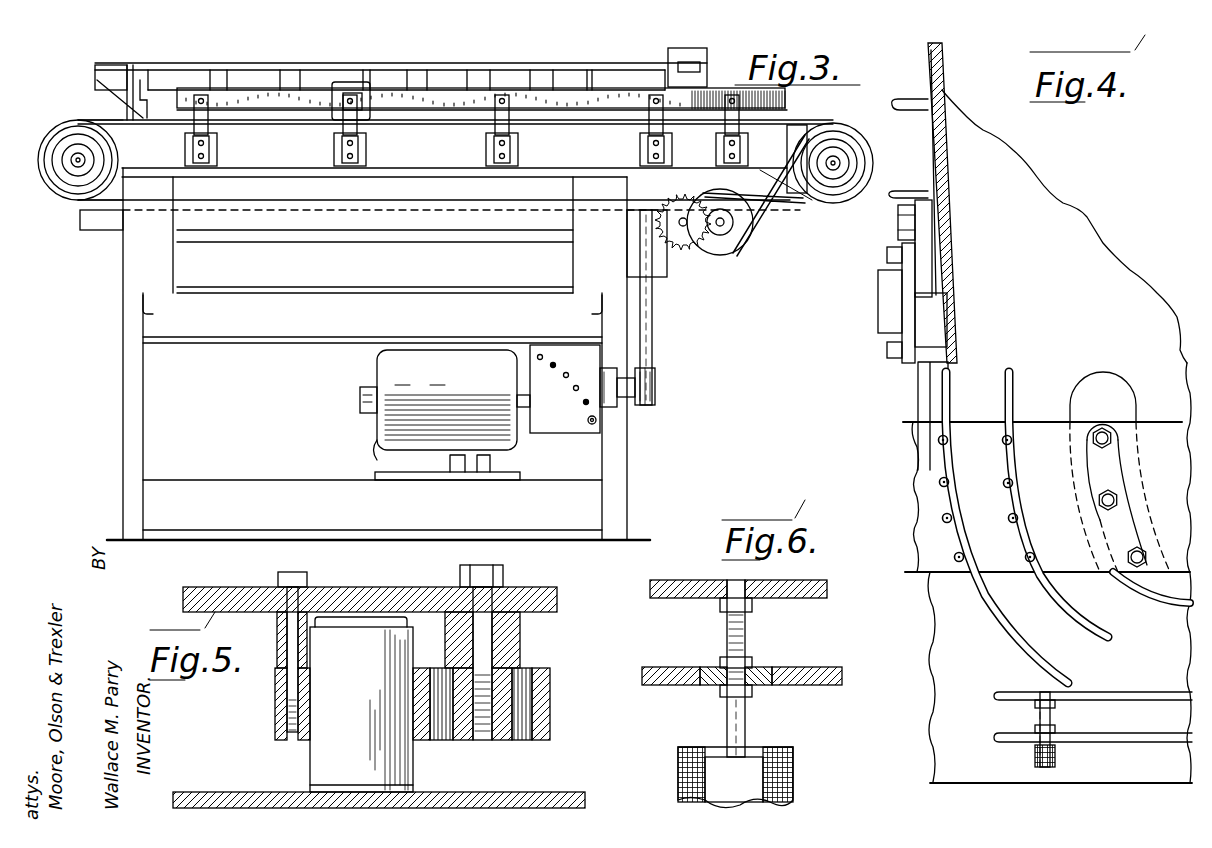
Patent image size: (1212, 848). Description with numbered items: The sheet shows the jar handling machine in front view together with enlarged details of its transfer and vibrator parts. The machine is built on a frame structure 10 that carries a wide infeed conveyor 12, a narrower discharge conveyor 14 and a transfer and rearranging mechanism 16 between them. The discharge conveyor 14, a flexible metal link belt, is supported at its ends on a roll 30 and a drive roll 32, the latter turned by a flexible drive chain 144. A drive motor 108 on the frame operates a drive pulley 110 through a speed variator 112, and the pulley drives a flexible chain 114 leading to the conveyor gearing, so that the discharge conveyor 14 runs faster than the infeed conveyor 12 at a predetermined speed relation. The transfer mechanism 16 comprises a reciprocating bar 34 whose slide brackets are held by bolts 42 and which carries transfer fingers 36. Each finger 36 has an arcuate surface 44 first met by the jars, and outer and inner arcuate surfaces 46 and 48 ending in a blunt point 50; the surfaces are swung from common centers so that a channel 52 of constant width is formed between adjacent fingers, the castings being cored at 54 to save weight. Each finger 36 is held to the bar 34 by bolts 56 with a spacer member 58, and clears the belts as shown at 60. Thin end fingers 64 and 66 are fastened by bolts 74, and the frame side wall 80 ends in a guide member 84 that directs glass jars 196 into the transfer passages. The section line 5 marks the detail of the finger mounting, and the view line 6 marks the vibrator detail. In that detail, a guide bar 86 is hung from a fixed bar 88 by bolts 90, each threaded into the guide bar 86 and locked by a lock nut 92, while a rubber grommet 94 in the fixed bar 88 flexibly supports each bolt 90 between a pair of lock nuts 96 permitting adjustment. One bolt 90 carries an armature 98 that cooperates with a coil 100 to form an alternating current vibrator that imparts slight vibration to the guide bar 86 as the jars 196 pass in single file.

In FIG. 3, the frame structure 10 is at (132, 403).
In FIG. 4, the infeed conveyor 12 is at (1090, 240).
In FIG. 5, the infeed conveyor 12 is at (225, 800).
In FIG. 3, the discharge conveyor 14 is at (100, 116).
In FIG. 4, the discharge conveyor 14 is at (940, 686).
In FIG. 5, the transfer and rearranging mechanism 16 is at (277, 640).
In FIG. 3, the roll 30 is at (78, 150).
In FIG. 3, the drive roll 32 is at (845, 128).
In FIG. 3, the reciprocating bar 34 is at (458, 72).
In FIG. 4, the reciprocating bar 34 is at (918, 576).
In FIG. 5, the reciprocating bar 34 is at (395, 600).
In FIG. 3, the transfer fingers 36 is at (522, 80).
In FIG. 4, the transfer fingers 36 is at (1100, 392).
In FIG. 5, the transfer fingers 36 is at (550, 728).
In FIG. 3, the bolts 42 is at (108, 65).
In FIG. 4, the arcuate surface 44 is at (1120, 372).
In FIG. 4, the arcuate surface 46 is at (1085, 530).
In FIG. 4, the arcuate surface 48 is at (1148, 520).
In FIG. 4, the blunt point 50 is at (1185, 605).
In FIG. 4, the channel 52 is at (1080, 585).
In FIG. 5, the cored portion 54 is at (525, 683).
In FIG. 4, the bolts 56 is at (1122, 575).
In FIG. 5, the bolts 56 is at (495, 566).
In FIG. 4, the spacer member 58 is at (1068, 483).
In FIG. 5, the spacer member 58 is at (520, 633).
In FIG. 5, the clearance 60 is at (520, 768).
In FIG. 4, the finger 64 is at (1012, 378).
In FIG. 5, the finger 64 is at (275, 694).
In FIG. 4, the finger 66 is at (955, 378).
In FIG. 4, the bolts 74 is at (955, 520).
In FIG. 5, the bolts 74 is at (302, 580).
In FIG. 4, the frame side wall 80 is at (928, 72).
In FIG. 4, the guide member 84 is at (948, 257).
In FIG. 4, the guide bar 86 is at (1140, 692).
In FIG. 6, the guide bar 86 is at (672, 600).
In FIG. 3, the fixed bar 88 is at (262, 102).
In FIG. 4, the fixed bar 88 is at (1132, 742).
In FIG. 6, the fixed bar 88 is at (668, 690).
In FIG. 4, the bolts 90 is at (1040, 718).
In FIG. 6, the bolts 90 is at (748, 635).
In FIG. 6, the lock nut 92 is at (755, 604).
In FIG. 6, the rubber grommet 94 is at (770, 690).
In FIG. 6, the lock nuts 96 is at (718, 695).
In FIG. 6, the armature 98 is at (740, 787).
In FIG. 3, the coil 100 is at (365, 120).
In FIG. 6, the coil 100 is at (790, 758).
In FIG. 3, the drive motor 108 is at (378, 437).
In FIG. 3, the drive pulley 110 is at (656, 375).
In FIG. 3, the speed variator 112 is at (565, 430).
In FIG. 3, the flexible chain 114 is at (653, 323).
In FIG. 3, the flexible drive chain 144 is at (768, 230).
In FIG. 5, the glass jars 196 is at (400, 770).
In FIG. 4, the section line 5— 5 is at (1178, 438).
In FIG. 3, the section line 6 is at (393, 98).